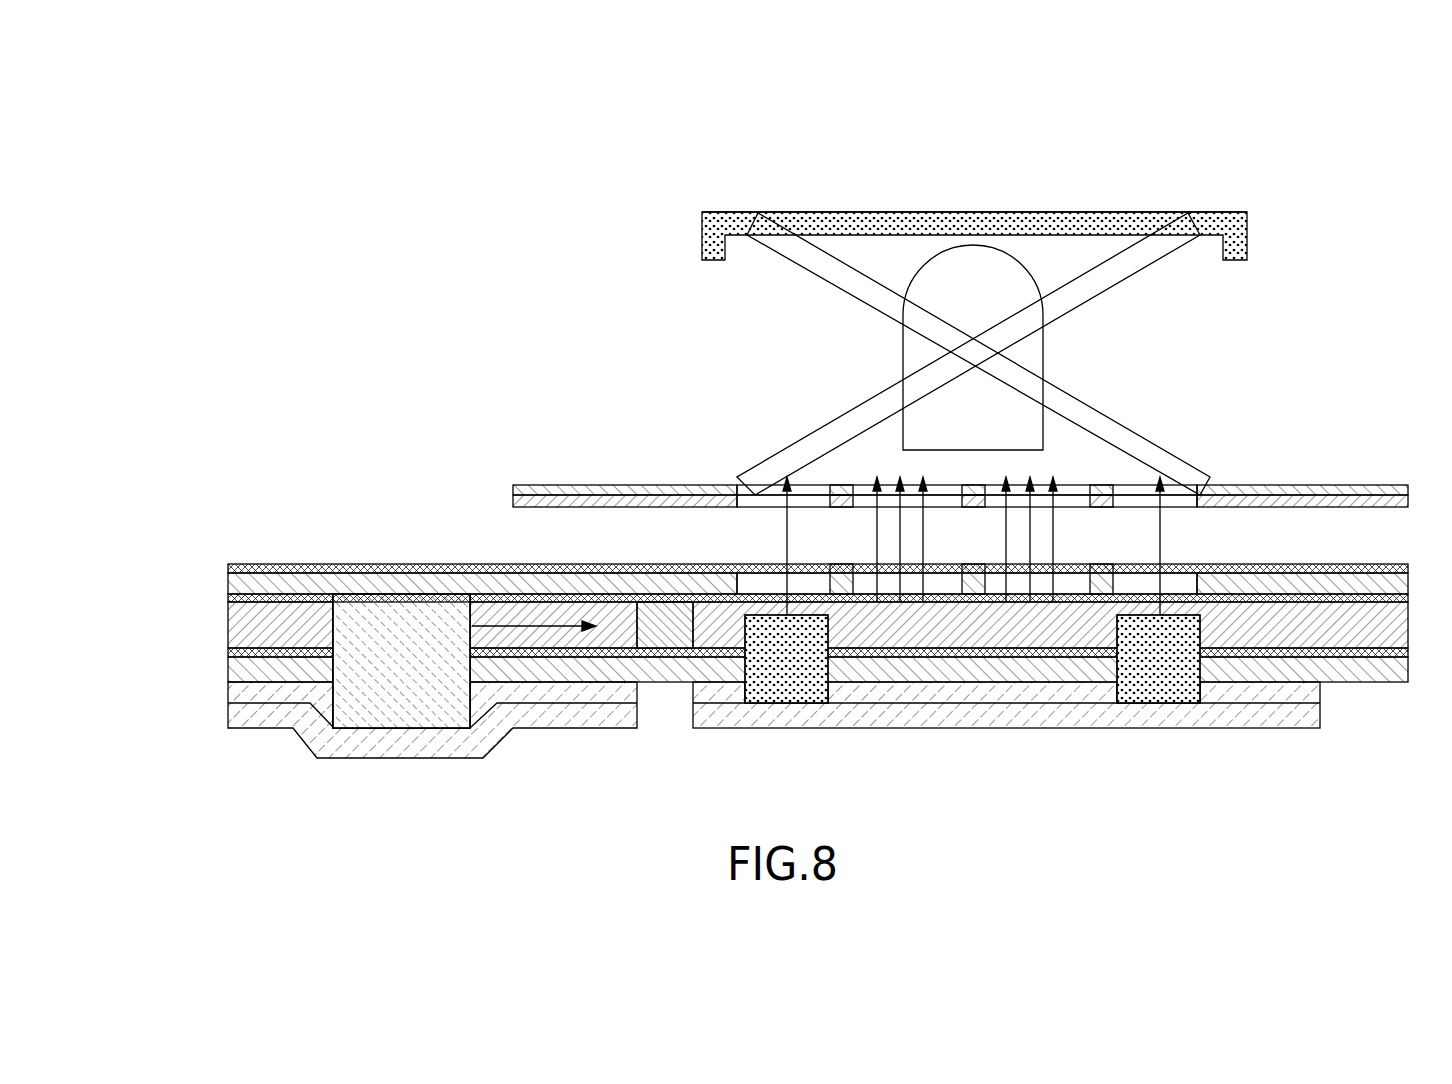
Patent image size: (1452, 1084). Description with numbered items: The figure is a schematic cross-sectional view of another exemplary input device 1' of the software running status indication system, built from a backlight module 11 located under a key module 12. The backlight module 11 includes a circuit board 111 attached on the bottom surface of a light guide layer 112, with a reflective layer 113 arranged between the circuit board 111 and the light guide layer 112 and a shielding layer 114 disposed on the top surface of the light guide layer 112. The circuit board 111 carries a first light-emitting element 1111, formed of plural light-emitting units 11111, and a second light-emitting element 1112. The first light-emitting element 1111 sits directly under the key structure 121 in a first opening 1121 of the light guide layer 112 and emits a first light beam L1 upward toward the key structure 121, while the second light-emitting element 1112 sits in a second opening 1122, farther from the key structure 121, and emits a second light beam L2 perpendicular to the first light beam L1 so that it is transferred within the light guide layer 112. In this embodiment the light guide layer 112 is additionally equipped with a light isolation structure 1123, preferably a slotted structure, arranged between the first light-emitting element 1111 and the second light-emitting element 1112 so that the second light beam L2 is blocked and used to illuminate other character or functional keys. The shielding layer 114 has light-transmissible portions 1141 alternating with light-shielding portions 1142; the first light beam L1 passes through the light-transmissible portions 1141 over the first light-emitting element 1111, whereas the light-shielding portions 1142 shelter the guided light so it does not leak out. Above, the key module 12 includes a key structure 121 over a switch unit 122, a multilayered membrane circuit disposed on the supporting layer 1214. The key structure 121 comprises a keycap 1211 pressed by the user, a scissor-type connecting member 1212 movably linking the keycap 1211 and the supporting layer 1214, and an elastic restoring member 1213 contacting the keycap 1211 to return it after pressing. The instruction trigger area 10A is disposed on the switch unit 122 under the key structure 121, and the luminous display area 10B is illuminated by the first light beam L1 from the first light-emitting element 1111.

The input device 1' is at (784, 456).
The instruction trigger area 10A is at (968, 492).
The luminous display area 10B is at (912, 213).
The backlight module 11 is at (251, 130).
The circuit board 111 is at (1308, 750).
The first light-emitting element 1111 is at (793, 673).
The light-emitting units 11111 is at (972, 732).
The second light-emitting element 1112 is at (353, 685).
The light guide layer 112 is at (240, 635).
The first opening 1121 is at (1202, 745).
The second opening 1122 is at (330, 630).
The light isolation structure 1123 is at (647, 627).
The reflective layer 113 is at (240, 670).
The shielding layer 114 is at (240, 585).
The light-transmissible portions 1141 is at (762, 578).
The light-shielding portions 1142 is at (1100, 580).
The key module 12 is at (251, 373).
The key structure 121 is at (318, 308).
The keycap 1211 is at (702, 232).
The connecting member 1212 is at (827, 420).
The elastic restoring member 1213 is at (903, 353).
The supporting layer 1214 is at (567, 498).
The switch unit 122 is at (560, 493).
The first light beam L1 is at (1163, 542).
The second light beam L2 is at (533, 620).